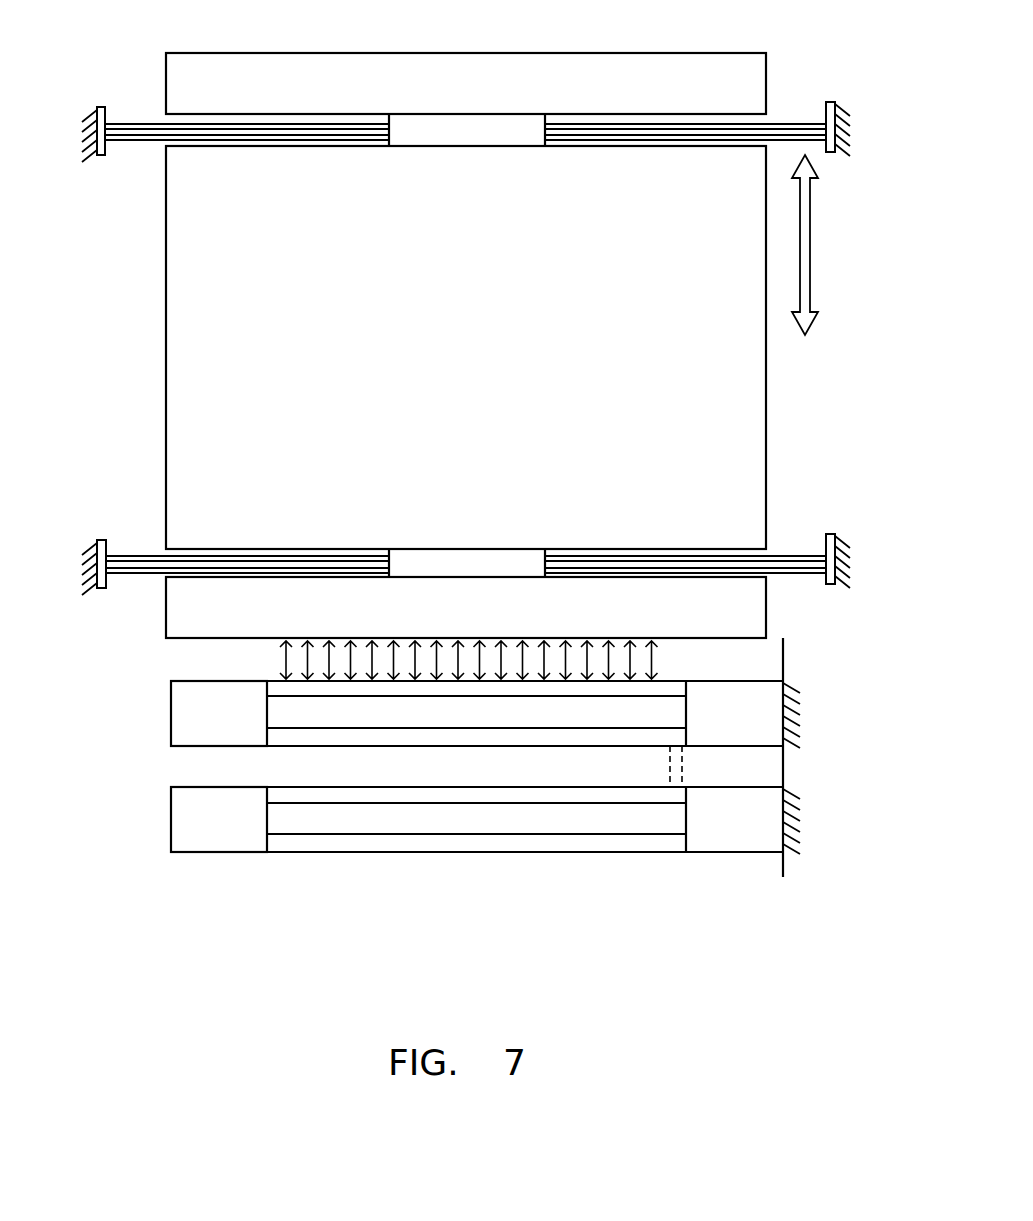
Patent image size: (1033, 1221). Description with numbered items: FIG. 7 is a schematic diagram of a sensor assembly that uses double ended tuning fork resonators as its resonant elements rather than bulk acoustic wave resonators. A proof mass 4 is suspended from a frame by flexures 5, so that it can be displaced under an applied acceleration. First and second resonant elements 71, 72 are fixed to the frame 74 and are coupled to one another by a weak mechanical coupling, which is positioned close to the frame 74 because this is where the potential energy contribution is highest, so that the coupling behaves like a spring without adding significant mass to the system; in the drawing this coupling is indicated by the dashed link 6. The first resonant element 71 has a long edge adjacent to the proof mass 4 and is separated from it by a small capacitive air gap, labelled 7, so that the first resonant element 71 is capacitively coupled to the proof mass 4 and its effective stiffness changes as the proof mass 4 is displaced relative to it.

The proof mass 4 is at (728, 422).
The flexures 5 is at (147, 124).
The connecting link 6 is at (693, 765).
The sensing electrode gap 7 is at (706, 660).
The first resonant element 71 is at (192, 723).
The second resonant element 72 is at (195, 827).
The frame 74 is at (797, 828).